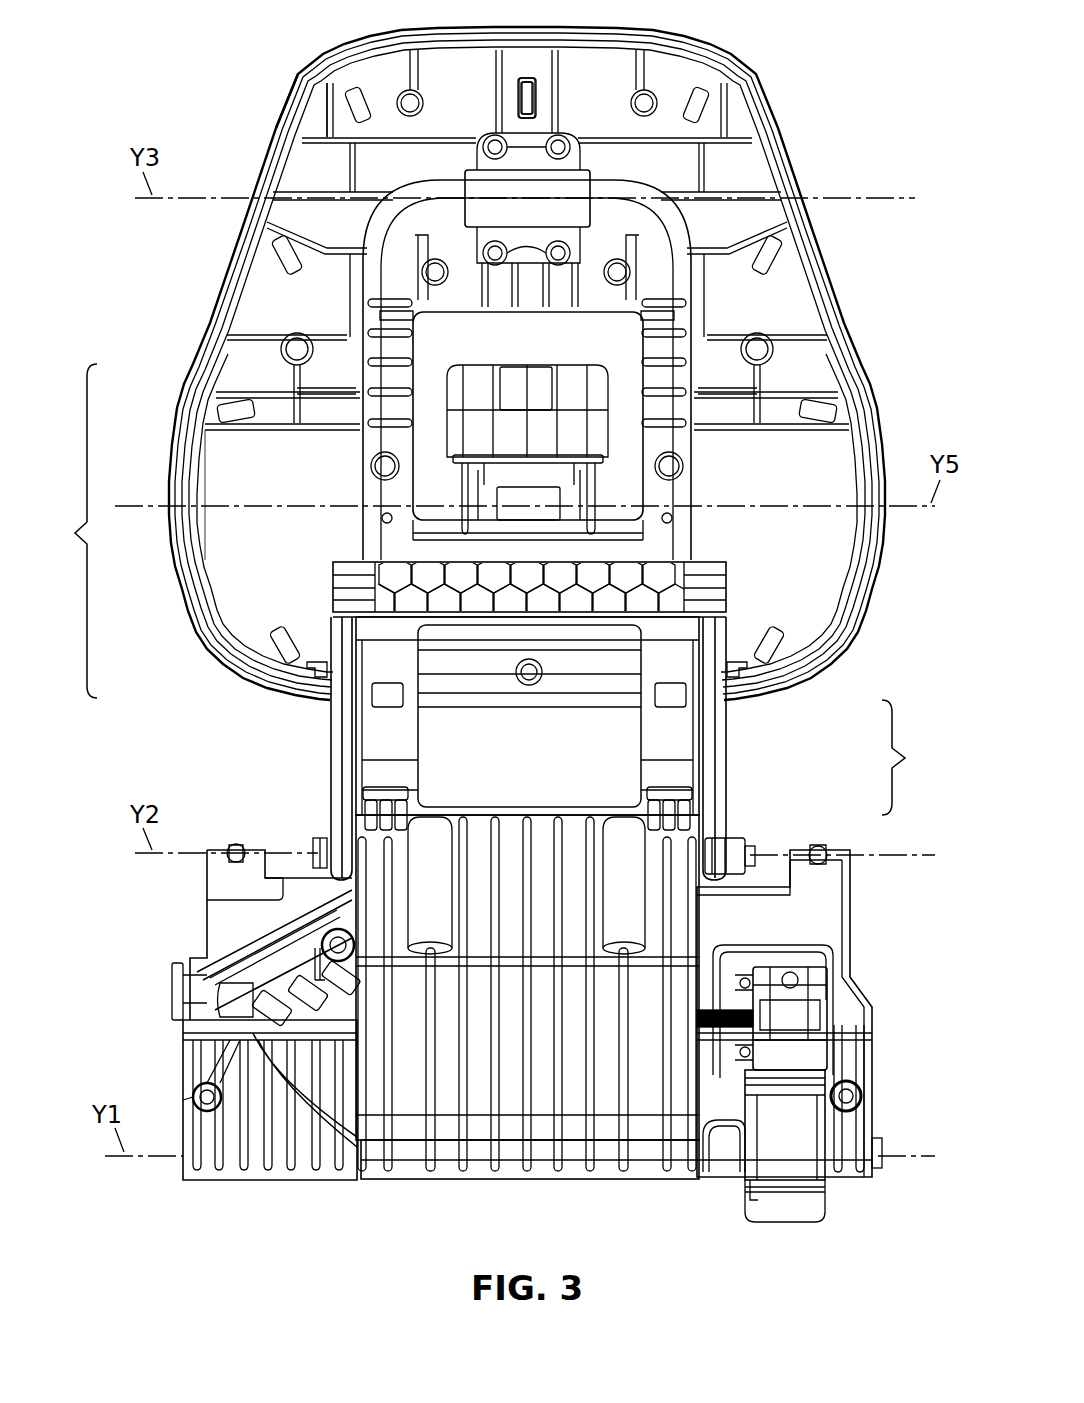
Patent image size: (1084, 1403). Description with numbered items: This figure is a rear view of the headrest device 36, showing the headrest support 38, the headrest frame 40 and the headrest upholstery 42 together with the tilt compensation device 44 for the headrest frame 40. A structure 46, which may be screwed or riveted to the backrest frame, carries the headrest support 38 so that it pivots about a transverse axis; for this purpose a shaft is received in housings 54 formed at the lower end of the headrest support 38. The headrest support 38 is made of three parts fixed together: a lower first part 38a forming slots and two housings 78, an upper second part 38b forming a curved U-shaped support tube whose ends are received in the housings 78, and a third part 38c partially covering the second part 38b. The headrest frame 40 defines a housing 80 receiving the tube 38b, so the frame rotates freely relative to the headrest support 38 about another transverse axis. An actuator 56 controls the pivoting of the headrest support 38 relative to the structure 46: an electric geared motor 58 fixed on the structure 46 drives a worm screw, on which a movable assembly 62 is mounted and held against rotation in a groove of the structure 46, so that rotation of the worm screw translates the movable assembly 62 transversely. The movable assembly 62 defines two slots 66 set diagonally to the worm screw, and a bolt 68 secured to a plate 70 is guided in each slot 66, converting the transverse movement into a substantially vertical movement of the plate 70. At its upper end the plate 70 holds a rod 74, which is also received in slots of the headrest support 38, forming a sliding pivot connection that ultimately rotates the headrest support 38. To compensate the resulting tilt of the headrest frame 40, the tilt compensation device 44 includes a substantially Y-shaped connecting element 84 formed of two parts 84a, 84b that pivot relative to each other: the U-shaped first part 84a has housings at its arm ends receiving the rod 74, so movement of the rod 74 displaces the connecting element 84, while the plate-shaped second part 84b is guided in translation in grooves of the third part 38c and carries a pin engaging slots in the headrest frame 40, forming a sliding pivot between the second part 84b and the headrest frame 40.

The headrest device 36 is at (868, 78).
The headrest frame 40 is at (352, 89).
The headrest upholstery 42 is at (296, 89).
The housing 80 is at (600, 174).
The headrest support 38 is at (70, 531).
The lower first part 38a is at (381, 753).
The upper second part 38b is at (383, 244).
The third part 38c is at (379, 499).
The connecting element 84 is at (635, 655).
The first part of the connecting element 84a is at (722, 827).
The second part of the connecting element 84b is at (573, 431).
The housings 78 is at (402, 672).
The housings 54 is at (414, 1185).
The tilt compensation device 44 is at (217, 954).
The movable assembly 62 is at (205, 1003).
The slots 66 is at (257, 983).
The bolt 68 is at (318, 937).
The plate 70 is at (322, 958).
The rod 74 is at (313, 847).
The actuator 56 is at (830, 1067).
The structure 46 is at (823, 923).
The electric geared motor 58 is at (792, 1167).